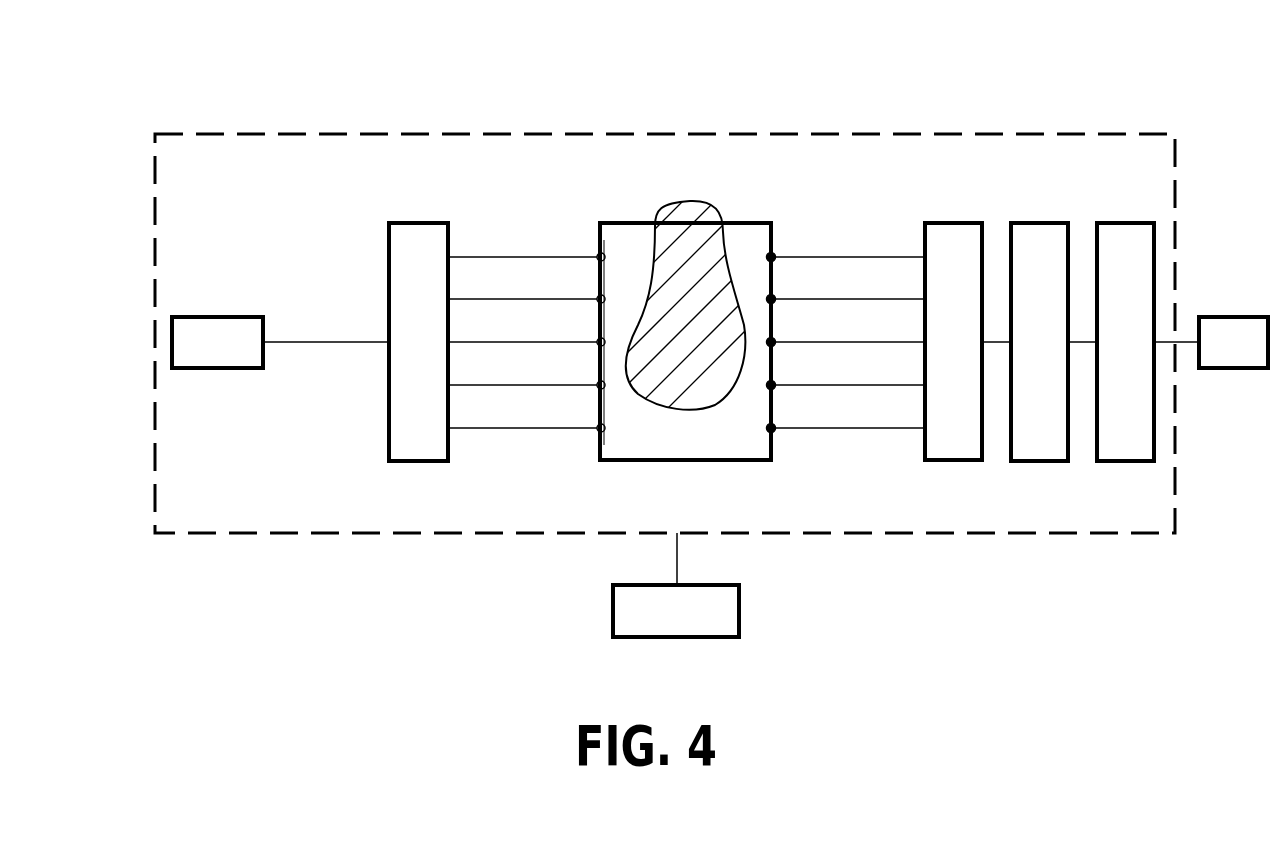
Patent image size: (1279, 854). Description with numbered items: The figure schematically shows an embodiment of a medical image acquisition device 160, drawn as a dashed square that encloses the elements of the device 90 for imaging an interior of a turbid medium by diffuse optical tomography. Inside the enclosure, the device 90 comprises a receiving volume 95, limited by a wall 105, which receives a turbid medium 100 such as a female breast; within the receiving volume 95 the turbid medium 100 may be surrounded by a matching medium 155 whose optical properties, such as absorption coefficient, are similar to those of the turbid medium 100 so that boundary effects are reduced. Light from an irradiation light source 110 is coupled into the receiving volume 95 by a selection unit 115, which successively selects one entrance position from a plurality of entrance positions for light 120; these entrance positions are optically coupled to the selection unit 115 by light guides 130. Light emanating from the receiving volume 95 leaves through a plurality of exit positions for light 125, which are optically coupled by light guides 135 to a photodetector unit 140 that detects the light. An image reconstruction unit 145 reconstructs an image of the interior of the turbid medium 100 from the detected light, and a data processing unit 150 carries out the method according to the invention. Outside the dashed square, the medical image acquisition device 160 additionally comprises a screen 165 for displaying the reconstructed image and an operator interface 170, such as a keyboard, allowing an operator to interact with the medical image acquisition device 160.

The device for imaging an interior of a turbid medium 90 is at (297, 252).
The receiving volume 95 is at (633, 434).
The turbid medium 100 is at (703, 202).
The wall 105 is at (737, 463).
The irradiation light source 110 is at (196, 356).
The selection unit 115 is at (397, 356).
The entrance positions for light 120 is at (600, 255).
The exit positions for light 125 is at (773, 255).
The light guides 130 is at (486, 257).
The light guides 135 is at (878, 257).
The photodetector unit 140 is at (932, 356).
The image reconstruction unit 145 is at (1104, 356).
The data processing unit 150 is at (1018, 356).
The matching medium 155 is at (607, 285).
The medical image acquisition device 160 is at (496, 93).
The screen 165 is at (1212, 356).
The operator interface 170 is at (655, 624).